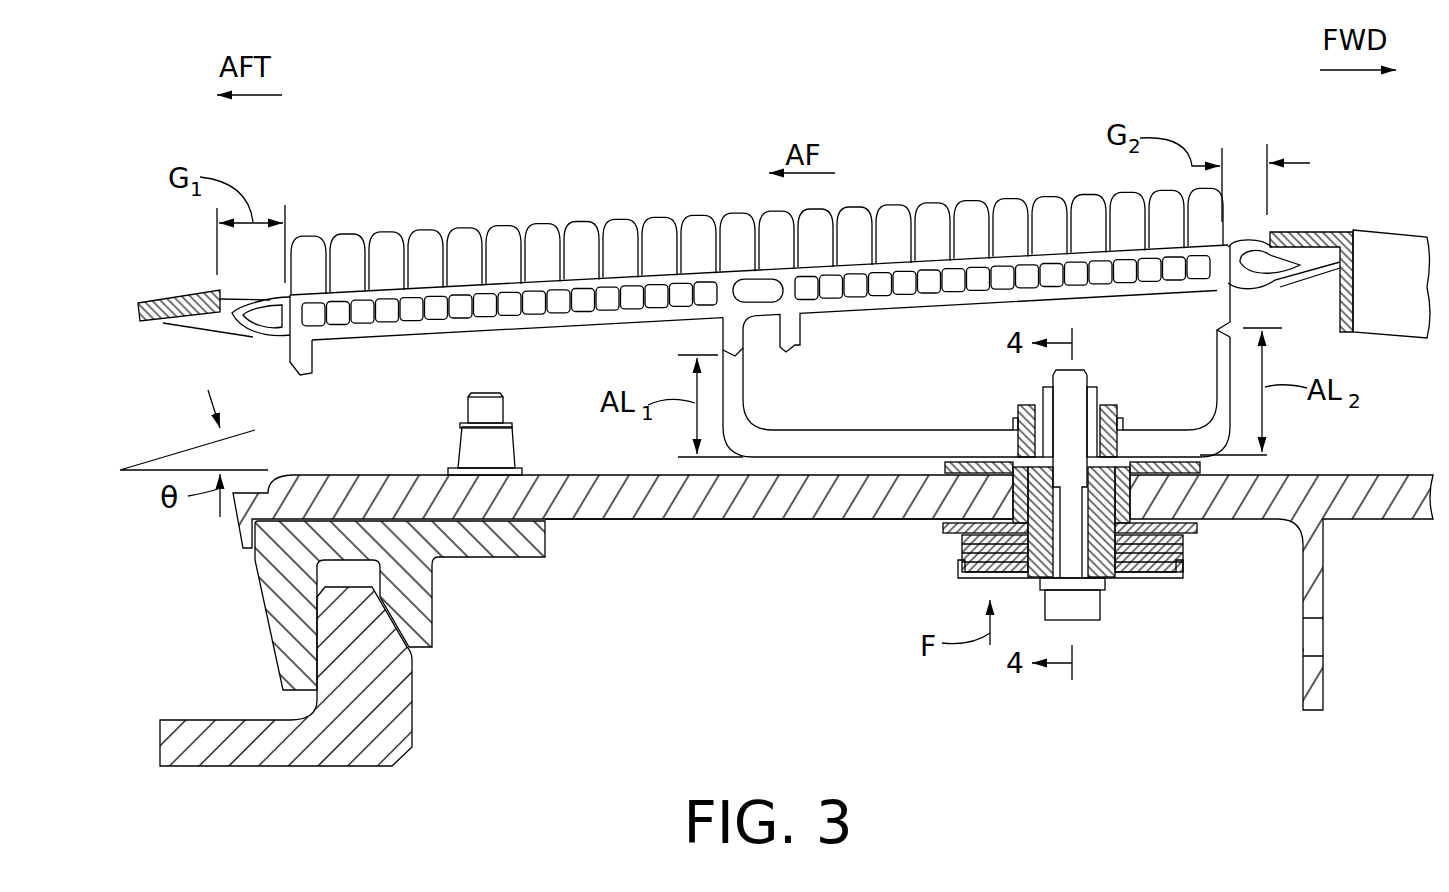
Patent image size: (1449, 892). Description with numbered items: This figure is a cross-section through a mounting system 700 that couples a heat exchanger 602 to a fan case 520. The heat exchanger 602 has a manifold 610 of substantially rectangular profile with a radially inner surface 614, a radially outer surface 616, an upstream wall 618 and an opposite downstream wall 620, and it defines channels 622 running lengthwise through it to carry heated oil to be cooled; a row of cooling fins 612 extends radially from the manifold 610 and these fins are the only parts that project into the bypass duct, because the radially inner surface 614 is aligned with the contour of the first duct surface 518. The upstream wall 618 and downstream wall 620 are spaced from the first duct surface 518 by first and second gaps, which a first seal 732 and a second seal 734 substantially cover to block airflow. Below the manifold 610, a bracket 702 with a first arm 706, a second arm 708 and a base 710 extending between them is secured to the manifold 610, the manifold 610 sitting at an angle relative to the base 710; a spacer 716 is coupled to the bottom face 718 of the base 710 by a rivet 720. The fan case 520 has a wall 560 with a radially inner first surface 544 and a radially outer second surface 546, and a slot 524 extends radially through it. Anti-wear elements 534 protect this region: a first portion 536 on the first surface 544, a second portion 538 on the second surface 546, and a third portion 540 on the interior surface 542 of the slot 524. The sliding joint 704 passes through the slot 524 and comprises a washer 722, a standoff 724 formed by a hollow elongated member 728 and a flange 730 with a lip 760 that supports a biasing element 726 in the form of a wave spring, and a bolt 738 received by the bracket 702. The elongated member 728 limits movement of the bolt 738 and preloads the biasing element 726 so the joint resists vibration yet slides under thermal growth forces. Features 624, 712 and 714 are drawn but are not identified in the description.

The first duct surface 518 is at (200, 290).
The fan case 520 is at (470, 602).
The slot 524 is at (1230, 473).
The anti-wear element 534 is at (1008, 504).
The first portion 536 is at (950, 456).
The second portion 538 is at (1195, 527).
The third portion 540 is at (945, 472).
The interior surface 542 is at (1135, 497).
The first surface 544 is at (602, 474).
The second surface 546 is at (607, 521).
The wall 560 is at (644, 524).
The heat exchanger 602 is at (937, 114).
The manifold 610 is at (478, 336).
The cooling fins 612 is at (378, 215).
The radially inner surface 614 is at (972, 215).
The radially outer surface 616 is at (552, 350).
The upstream wall 618 is at (1233, 306).
The downstream wall 620 is at (283, 352).
The channel 622 is at (880, 292).
The fins 624 is at (700, 240).
The mounting system 700 is at (1307, 425).
The bracket 702 is at (944, 422).
The sliding joint 704 is at (878, 664).
The first arm 706 is at (744, 386).
The second arm 708 is at (1213, 357).
The base 710 is at (966, 394).
The aft hook 712 is at (716, 348).
The forward notch 714 is at (1240, 323).
The spacer 716 is at (1131, 447).
The bottom face 718 is at (817, 458).
The rivet 720 is at (1108, 404).
The washer 722 is at (980, 529).
The standoff 724 is at (1187, 591).
The biasing element 726 is at (1192, 557).
The elongated member 728 is at (1100, 562).
The flange 730 is at (968, 578).
The first seal 732 is at (240, 325).
The second seal 734 is at (1346, 272).
The bolt 738 is at (1104, 613).
The lip 760 is at (962, 570).